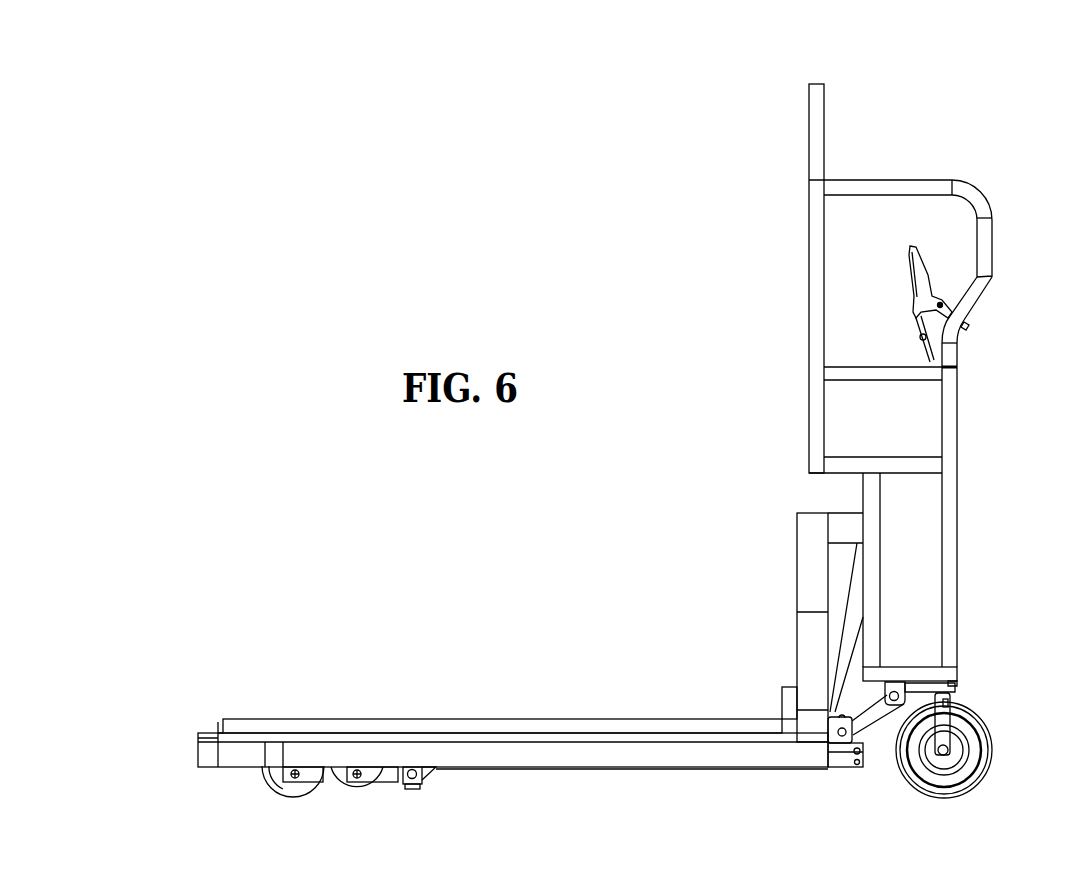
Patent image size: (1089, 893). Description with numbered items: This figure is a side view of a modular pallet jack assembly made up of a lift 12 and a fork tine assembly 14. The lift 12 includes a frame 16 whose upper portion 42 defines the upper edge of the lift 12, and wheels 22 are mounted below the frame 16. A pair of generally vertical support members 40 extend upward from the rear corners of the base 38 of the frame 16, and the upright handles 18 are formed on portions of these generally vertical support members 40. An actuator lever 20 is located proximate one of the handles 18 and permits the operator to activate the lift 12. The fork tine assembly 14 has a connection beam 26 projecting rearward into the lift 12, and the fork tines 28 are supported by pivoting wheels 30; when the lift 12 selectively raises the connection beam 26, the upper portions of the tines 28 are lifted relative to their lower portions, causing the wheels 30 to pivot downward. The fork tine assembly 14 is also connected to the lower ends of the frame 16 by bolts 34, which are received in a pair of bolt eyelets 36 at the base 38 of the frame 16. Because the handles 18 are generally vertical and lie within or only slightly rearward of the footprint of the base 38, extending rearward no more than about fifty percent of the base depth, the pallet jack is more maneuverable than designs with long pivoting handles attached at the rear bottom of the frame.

The lift 12 is at (895, 180).
The fork tine assembly 14 is at (797, 574).
The frame 16 is at (958, 540).
The upright handles 18 is at (984, 245).
The actuator lever 20 is at (923, 295).
The wheels 22 is at (942, 797).
The connection beam 26 is at (845, 512).
The fork tines 28 is at (520, 718).
The pivoting wheels 30 is at (297, 797).
The bolts 34 is at (894, 702).
The bolt eyelets 36 is at (950, 691).
The base 38 is at (912, 668).
The generally vertical support members 40 is at (950, 427).
The upper portion 42 is at (817, 85).